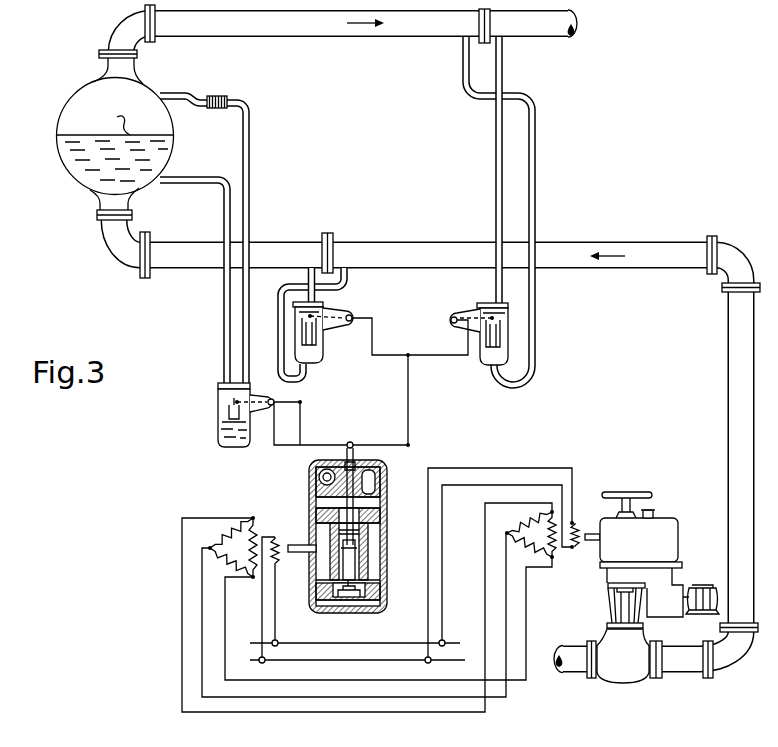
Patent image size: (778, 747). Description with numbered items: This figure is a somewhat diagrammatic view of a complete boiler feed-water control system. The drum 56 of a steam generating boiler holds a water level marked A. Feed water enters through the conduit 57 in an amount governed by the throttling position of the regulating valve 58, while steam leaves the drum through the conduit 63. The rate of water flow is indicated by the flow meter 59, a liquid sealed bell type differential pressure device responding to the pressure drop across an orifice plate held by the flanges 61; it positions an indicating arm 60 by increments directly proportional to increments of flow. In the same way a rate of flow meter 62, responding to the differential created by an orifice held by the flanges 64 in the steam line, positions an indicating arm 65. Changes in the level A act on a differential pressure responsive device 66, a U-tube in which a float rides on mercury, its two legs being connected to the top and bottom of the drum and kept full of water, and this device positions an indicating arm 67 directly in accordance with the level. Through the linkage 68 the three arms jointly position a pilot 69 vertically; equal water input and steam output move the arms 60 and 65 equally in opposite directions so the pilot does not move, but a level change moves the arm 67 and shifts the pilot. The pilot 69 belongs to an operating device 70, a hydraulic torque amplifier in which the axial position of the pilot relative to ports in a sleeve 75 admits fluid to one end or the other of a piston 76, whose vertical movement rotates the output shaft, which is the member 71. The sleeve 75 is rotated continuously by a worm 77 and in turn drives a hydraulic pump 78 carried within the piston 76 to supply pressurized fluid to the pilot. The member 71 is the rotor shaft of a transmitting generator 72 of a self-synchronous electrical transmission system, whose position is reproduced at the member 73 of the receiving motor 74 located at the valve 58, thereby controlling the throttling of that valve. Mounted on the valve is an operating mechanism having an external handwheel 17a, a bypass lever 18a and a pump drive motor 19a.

The external handwheel 17a is at (640, 493).
The bypass lever 18a is at (654, 513).
The pump drive motor 19a is at (690, 586).
The drum 56 is at (61, 108).
The conduit 57 is at (727, 388).
The regulating valve 58 is at (625, 682).
The flow meter 59 is at (324, 352).
The indicating arm 60 is at (356, 318).
The flanges 61 is at (327, 233).
The rate of flow meter 62 is at (481, 361).
The conduit 63 is at (368, 37).
The flanges 64 is at (486, 44).
The indicating arm 65 is at (456, 324).
The differential pressure responsive device 66 is at (218, 418).
The indicating arm 67 is at (300, 405).
The linkage 68 is at (371, 382).
The pilot 69 is at (353, 462).
The operating device 70 is at (348, 548).
The member 71 is at (300, 546).
The transmitting generator 72 is at (377, 590).
The member 73 is at (576, 527).
The receiving motor 74 is at (543, 543).
The sleeve 75 is at (348, 465).
The piston 76 is at (381, 520).
The worm 77 is at (319, 478).
The hydraulic pump 78 is at (365, 590).